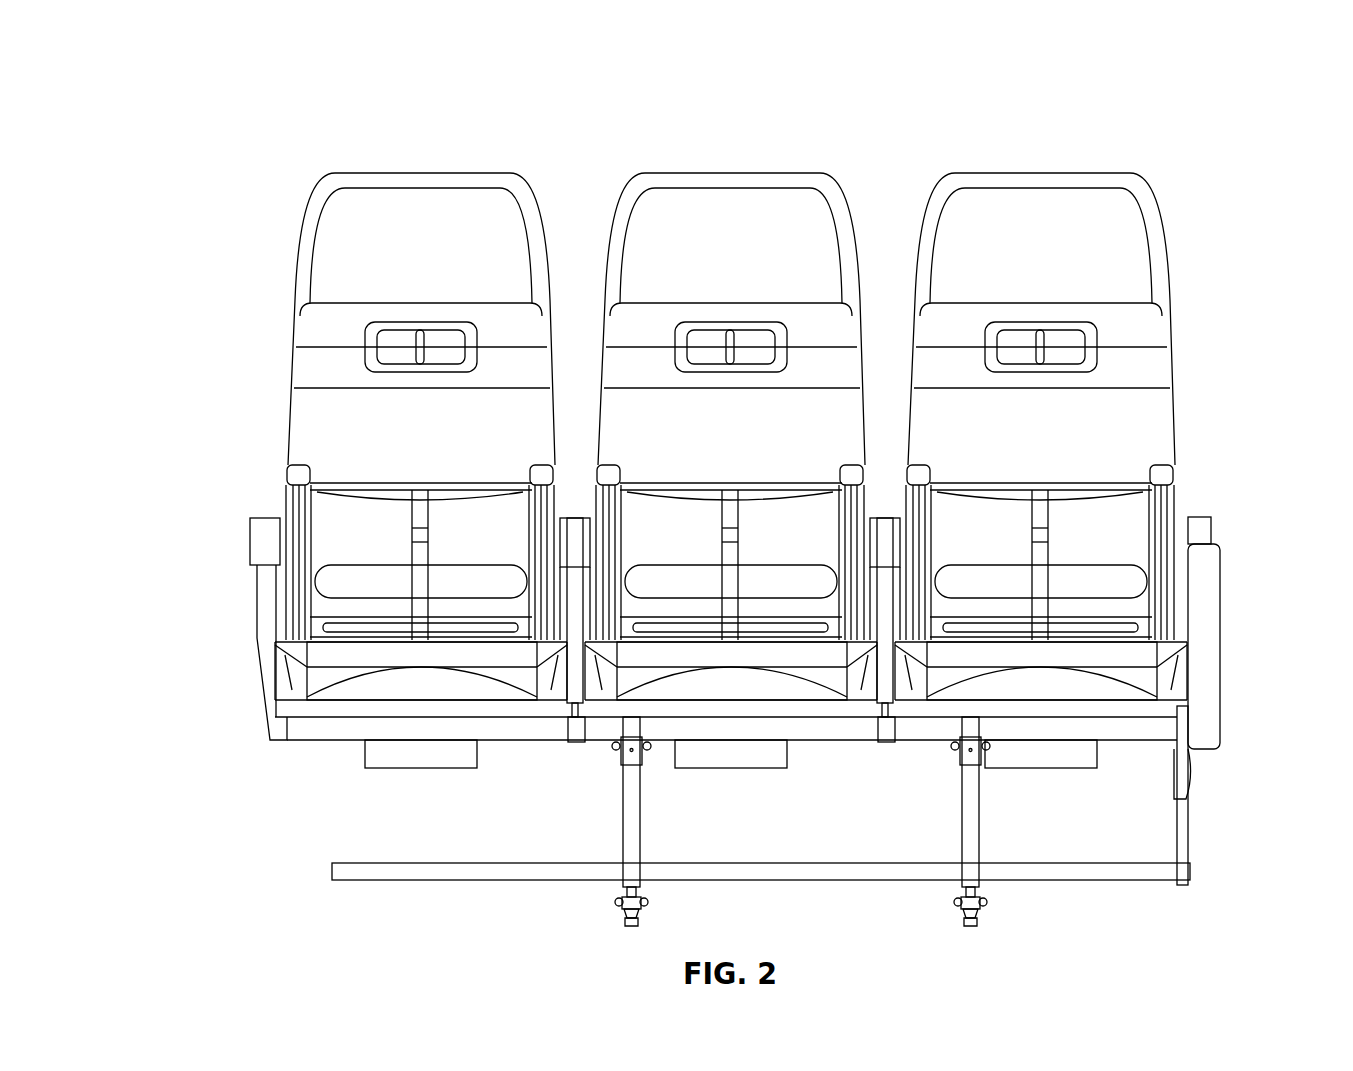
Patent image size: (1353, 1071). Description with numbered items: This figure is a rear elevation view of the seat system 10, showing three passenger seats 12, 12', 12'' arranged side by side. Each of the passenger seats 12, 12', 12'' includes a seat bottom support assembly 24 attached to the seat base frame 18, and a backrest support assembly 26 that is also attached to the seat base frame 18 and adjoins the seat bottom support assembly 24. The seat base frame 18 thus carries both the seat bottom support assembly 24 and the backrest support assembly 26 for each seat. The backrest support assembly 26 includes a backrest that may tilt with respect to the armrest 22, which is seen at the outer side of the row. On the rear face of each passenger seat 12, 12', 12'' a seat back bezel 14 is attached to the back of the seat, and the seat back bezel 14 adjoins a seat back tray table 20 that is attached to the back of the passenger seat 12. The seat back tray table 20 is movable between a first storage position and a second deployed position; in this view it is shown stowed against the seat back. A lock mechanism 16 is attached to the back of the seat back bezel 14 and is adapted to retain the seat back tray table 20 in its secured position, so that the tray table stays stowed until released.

The seat system 10 is at (248, 165).
The passenger seat 12 is at (333, 387).
The passenger seat 12' is at (731, 367).
The passenger seat 12'' is at (1041, 367).
The seat back bezel 14 is at (308, 288).
The lock mechanism 16 is at (422, 352).
The seat base frame 18 is at (970, 878).
The seat back tray table 20 is at (390, 433).
The armrest 22 is at (1193, 530).
The seat bottom support assembly 24 is at (333, 690).
The backrest support assembly 26 is at (337, 595).